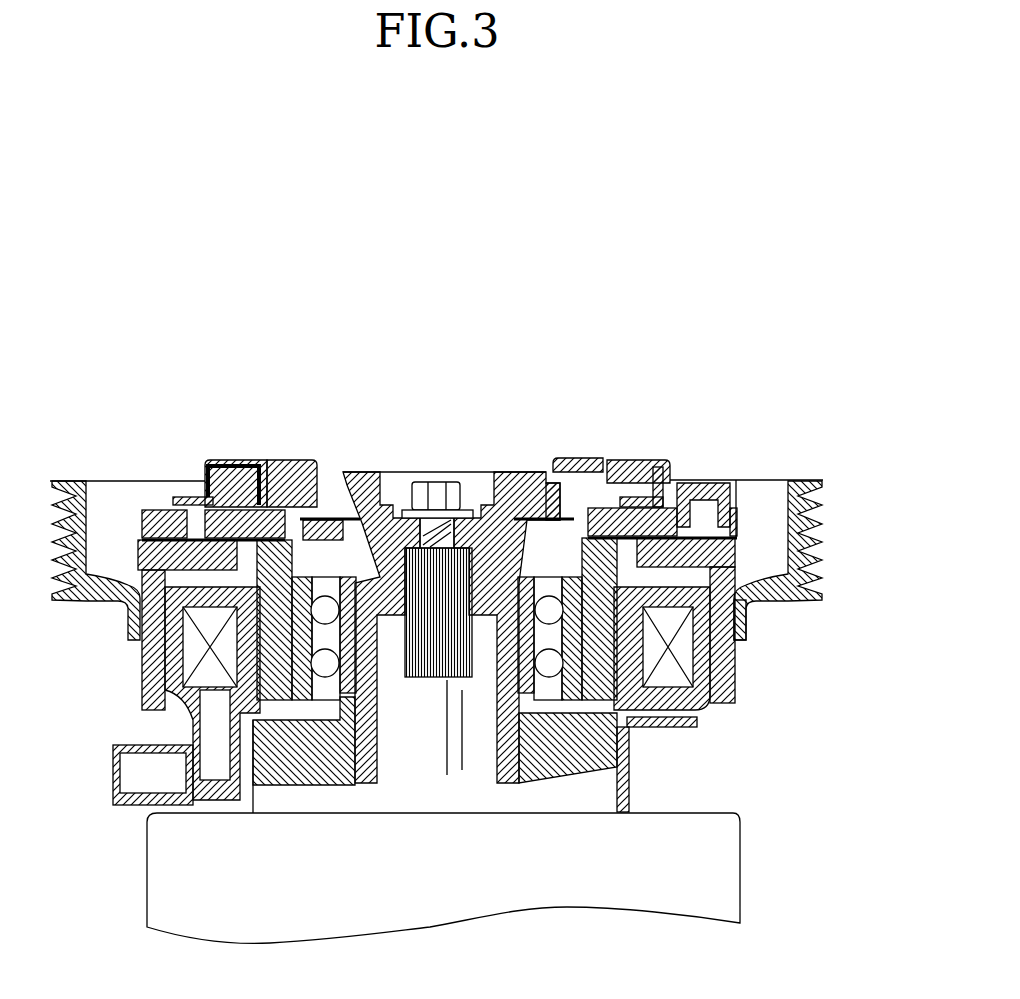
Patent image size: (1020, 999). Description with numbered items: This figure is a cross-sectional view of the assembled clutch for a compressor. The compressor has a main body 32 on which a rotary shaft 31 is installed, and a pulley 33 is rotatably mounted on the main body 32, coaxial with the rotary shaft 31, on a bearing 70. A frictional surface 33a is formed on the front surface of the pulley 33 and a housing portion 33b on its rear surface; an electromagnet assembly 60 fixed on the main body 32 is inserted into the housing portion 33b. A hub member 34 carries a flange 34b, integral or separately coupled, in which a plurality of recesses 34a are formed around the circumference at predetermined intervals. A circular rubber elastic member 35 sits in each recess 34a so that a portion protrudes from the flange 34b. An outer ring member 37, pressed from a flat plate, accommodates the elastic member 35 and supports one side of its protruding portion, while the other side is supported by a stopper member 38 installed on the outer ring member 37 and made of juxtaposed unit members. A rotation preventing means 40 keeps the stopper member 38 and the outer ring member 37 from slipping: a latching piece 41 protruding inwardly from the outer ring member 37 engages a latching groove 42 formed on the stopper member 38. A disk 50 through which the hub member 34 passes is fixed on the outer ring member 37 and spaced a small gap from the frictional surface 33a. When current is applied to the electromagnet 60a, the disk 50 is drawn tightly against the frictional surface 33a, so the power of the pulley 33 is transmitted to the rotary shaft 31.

The rotary shaft 31 is at (420, 482).
The main body 32 is at (170, 890).
The pulley 33 is at (820, 533).
The frictional surface 33a is at (738, 503).
The housing portion 33b is at (750, 620).
The hub member 34 is at (513, 469).
The recesses 34a is at (589, 458).
The flange 34b is at (553, 483).
The elastic member 35 is at (617, 460).
The outer ring member 37 is at (679, 483).
The stopper member 38 is at (658, 466).
The rotation preventing means 40 is at (245, 415).
The latching piece 41 is at (252, 462).
The latching groove 42 is at (268, 373).
The disk 50 is at (150, 510).
The electromagnet assembly 60 is at (167, 721).
The electromagnet 60a is at (703, 707).
The bearing 70 is at (640, 730).